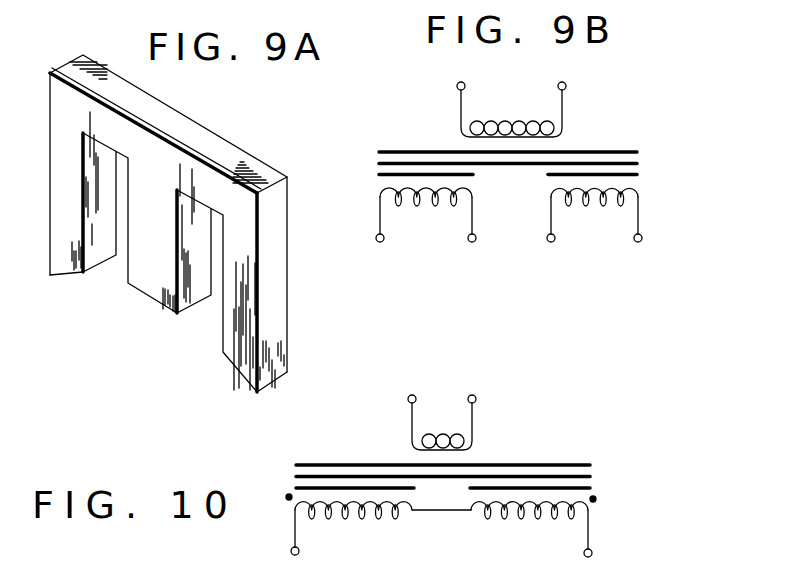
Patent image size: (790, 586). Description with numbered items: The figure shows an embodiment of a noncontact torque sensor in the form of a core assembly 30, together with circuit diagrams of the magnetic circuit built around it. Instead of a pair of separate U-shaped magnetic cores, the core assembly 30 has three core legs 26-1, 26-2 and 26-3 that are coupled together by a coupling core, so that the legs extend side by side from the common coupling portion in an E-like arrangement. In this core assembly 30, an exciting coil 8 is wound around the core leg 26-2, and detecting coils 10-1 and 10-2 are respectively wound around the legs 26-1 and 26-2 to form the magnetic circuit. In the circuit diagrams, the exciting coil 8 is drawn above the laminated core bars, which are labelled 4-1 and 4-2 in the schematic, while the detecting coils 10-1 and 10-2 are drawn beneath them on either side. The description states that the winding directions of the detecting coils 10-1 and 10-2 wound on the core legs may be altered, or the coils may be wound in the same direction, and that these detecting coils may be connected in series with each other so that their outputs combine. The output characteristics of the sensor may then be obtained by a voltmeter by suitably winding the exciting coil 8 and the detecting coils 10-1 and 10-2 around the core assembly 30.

In FIG. 9A, the core assembly 30 is at (217, 145).
In FIG. 9A, the core leg 26-1 is at (57, 255).
In FIG. 9A, the core leg 26-2 is at (142, 267).
In FIG. 9A, the core leg 26-3 is at (268, 328).
In FIG. 9B, the exciting coil 8 is at (562, 115).
In FIG. 10, the exciting coil 8 is at (472, 430).
In FIG. 9B, the first core section 4-1 is at (374, 168).
In FIG. 10, the first core section 4-1 is at (292, 478).
In FIG. 9B, the second core section 4-2 is at (638, 170).
In FIG. 10, the second core section 4-2 is at (590, 482).
In FIG. 9B, the detecting coil 10-1 is at (470, 218).
In FIG. 10, the detecting coil 10-1 is at (377, 522).
In FIG. 9B, the detecting coil 10-2 is at (551, 220).
In FIG. 10, the detecting coil 10-2 is at (512, 520).